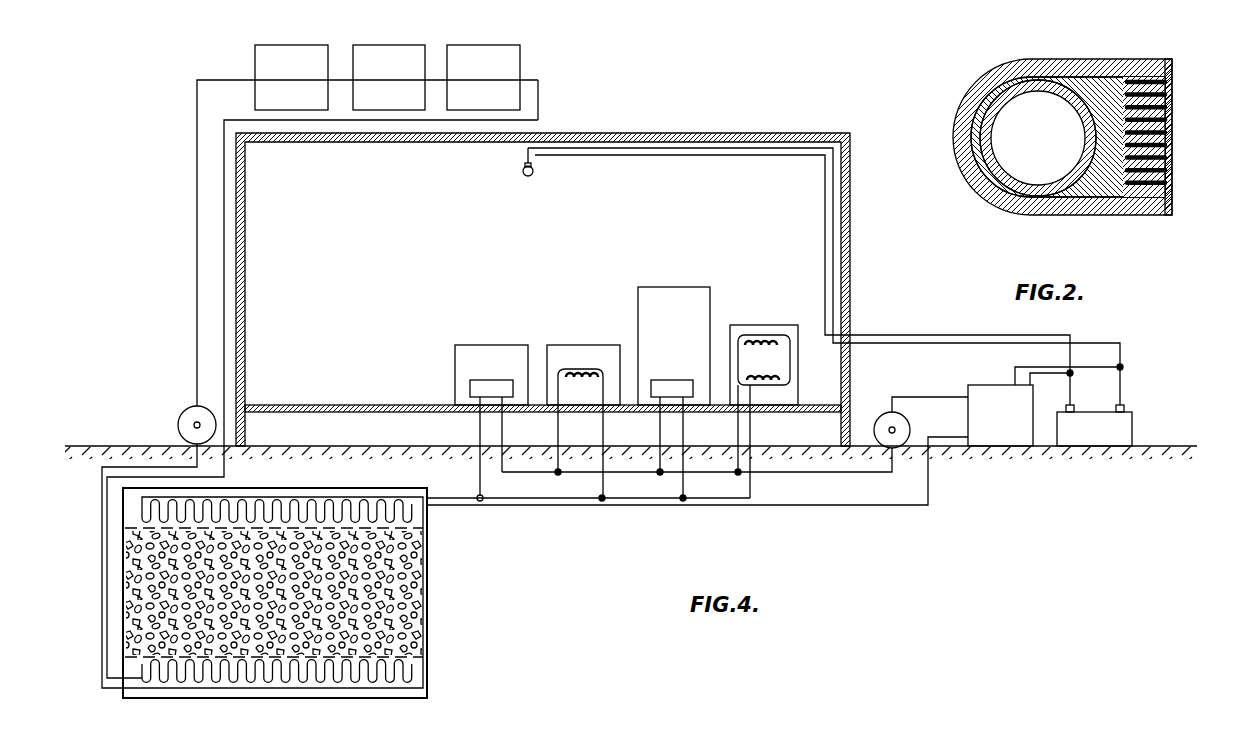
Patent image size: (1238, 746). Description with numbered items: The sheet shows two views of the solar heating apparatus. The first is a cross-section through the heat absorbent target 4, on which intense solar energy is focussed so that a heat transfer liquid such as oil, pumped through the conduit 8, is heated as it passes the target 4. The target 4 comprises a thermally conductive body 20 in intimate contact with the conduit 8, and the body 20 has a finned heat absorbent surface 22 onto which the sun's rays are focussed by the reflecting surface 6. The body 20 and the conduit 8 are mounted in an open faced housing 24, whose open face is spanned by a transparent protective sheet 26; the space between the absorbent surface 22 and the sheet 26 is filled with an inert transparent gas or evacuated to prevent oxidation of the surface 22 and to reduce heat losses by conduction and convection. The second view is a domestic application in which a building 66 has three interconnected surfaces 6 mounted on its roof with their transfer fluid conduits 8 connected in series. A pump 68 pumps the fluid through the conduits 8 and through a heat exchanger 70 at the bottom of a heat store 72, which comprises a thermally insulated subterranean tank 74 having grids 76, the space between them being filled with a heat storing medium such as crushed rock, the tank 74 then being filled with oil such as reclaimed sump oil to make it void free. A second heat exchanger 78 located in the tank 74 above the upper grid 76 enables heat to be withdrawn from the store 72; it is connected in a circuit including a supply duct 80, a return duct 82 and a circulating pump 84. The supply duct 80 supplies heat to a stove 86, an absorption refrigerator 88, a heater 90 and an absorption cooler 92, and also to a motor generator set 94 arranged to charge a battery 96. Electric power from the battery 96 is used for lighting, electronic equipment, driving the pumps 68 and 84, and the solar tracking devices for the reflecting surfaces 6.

In FIG. 2, the target 4 is at (1160, 56).
In FIG. 4, the surface 6 is at (298, 58).
In FIG. 4, the conduit 8 is at (231, 80).
In FIG. 2, the conduit 8 is at (978, 199).
In FIG. 2, the thermally conductive body 20 is at (1108, 186).
In FIG. 2, the finned heat absorbent surface 22 is at (1168, 148).
In FIG. 2, the open faced housing 24 is at (1004, 208).
In FIG. 2, the transparent protective sheet 26 is at (1175, 112).
In FIG. 4, the building 66 is at (758, 133).
In FIG. 4, the pump 68 is at (178, 422).
In FIG. 4, the heat exchanger 70 is at (415, 680).
In FIG. 4, the heat store 72 is at (432, 608).
In FIG. 4, the subterranean tank 74 is at (427, 574).
In FIG. 4, the grids 76 is at (418, 537).
In FIG. 4, the second heat exchanger 78 is at (140, 508).
In FIG. 4, the supply duct 80 is at (808, 506).
In FIG. 4, the return duct 82 is at (835, 473).
In FIG. 4, the circulating pump 84 is at (884, 417).
In FIG. 4, the stove 86 is at (768, 325).
In FIG. 4, the absorption refrigerator 88 is at (697, 287).
In FIG. 4, the heater 90 is at (585, 345).
In FIG. 4, the absorption cooler 92 is at (490, 345).
In FIG. 4, the motor generator set 94 is at (978, 390).
In FIG. 4, the battery 96 is at (1117, 428).